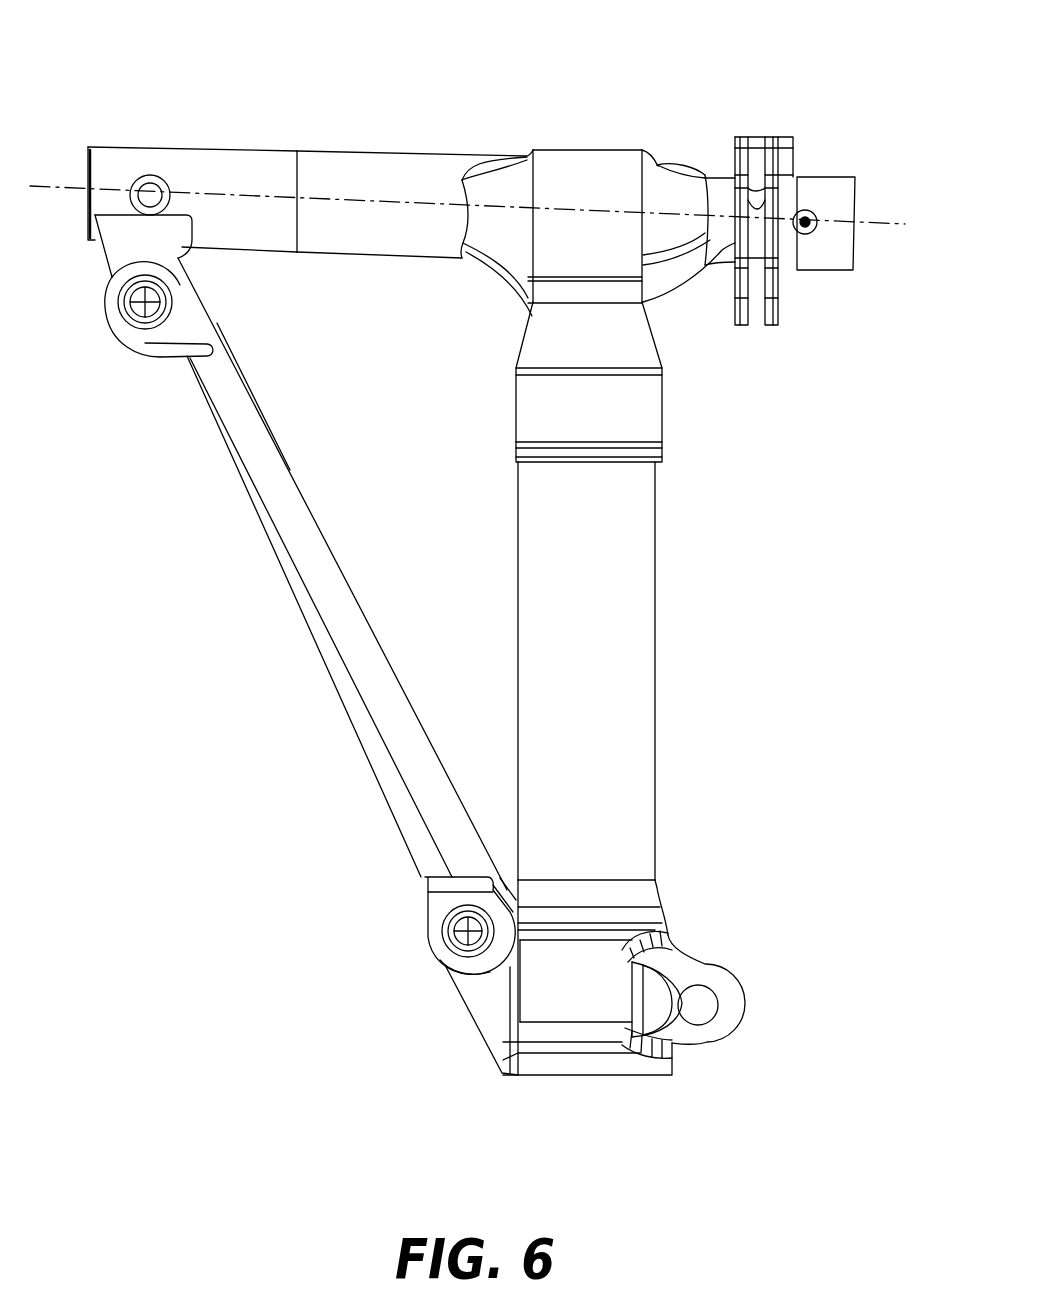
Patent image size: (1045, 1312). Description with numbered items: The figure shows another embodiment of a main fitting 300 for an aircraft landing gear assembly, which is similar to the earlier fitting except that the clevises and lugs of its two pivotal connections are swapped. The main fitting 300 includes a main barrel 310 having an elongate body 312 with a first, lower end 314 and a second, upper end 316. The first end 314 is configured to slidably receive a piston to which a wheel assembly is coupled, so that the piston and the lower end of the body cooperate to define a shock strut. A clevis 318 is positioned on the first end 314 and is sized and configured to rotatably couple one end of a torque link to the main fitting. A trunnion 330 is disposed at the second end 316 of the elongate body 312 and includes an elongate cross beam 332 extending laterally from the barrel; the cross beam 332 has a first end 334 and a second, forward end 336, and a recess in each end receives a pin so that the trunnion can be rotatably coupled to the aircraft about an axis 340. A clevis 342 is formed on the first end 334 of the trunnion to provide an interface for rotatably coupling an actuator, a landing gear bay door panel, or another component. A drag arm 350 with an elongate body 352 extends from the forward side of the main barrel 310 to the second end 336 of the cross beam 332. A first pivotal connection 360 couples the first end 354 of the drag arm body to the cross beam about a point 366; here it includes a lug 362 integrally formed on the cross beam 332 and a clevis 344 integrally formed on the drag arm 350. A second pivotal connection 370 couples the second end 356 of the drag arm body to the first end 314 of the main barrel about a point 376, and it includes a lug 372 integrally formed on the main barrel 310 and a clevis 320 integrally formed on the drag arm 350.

The main fitting 300 is at (757, 76).
The main barrel 310 is at (658, 610).
The elongate body 312 is at (614, 691).
The first end 314 is at (625, 876).
The second end 316 is at (607, 258).
The clevis 318 is at (722, 1040).
The clevis 320 is at (432, 950).
The trunnion 330 is at (510, 126).
The cross beam 332 is at (388, 168).
The first end 334 is at (830, 178).
The second end 336 is at (173, 148).
The axis 340 is at (897, 218).
The clevis 342 is at (768, 325).
The clevis 344 is at (120, 300).
The drag arm 350 is at (295, 630).
The elongate body 352 is at (255, 443).
The first end 354 is at (240, 358).
The second end 356 is at (513, 882).
The first pivotal connection 360 is at (190, 275).
The lug 362 is at (135, 252).
The point 366 is at (130, 318).
The second pivotal connection 370 is at (425, 915).
The lug 372 is at (490, 1010).
The point 376 is at (455, 952).